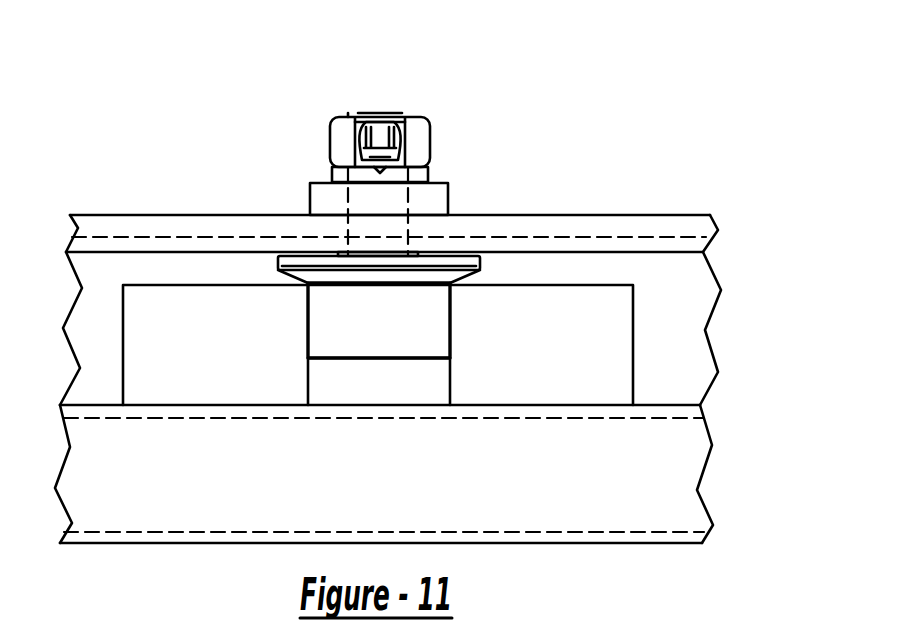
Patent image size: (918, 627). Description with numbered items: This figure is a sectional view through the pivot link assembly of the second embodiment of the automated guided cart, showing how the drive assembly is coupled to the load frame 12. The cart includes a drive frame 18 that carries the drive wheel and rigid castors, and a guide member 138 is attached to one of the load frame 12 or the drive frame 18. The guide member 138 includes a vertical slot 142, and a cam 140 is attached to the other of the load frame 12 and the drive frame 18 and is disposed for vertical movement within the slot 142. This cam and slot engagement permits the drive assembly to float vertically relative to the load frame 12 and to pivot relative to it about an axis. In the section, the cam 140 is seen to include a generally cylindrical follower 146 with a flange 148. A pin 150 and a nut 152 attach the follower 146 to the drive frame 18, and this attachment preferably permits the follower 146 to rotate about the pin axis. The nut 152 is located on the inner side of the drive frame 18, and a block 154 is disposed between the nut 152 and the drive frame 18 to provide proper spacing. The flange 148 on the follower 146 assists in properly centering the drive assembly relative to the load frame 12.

The load frame 12 is at (598, 480).
The drive frame 18 is at (592, 226).
The guide member 138 is at (645, 371).
The cam 140 is at (337, 98).
The vertical slot 142 is at (310, 373).
The follower 146 is at (417, 325).
The flange 148 is at (294, 266).
The pin 150 is at (367, 198).
The nut 152 is at (430, 133).
The block 154 is at (430, 168).